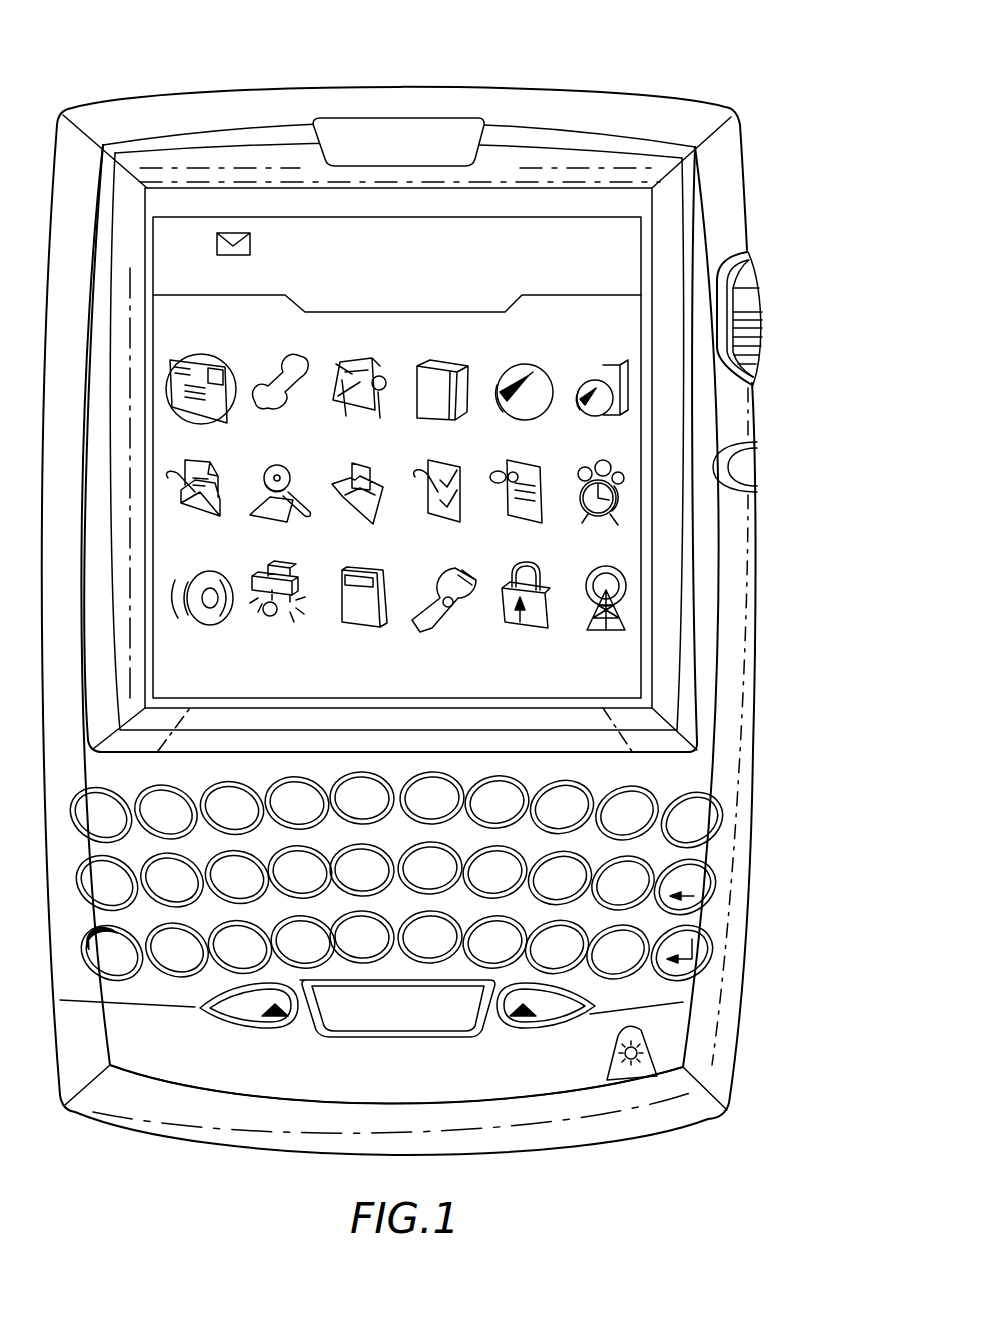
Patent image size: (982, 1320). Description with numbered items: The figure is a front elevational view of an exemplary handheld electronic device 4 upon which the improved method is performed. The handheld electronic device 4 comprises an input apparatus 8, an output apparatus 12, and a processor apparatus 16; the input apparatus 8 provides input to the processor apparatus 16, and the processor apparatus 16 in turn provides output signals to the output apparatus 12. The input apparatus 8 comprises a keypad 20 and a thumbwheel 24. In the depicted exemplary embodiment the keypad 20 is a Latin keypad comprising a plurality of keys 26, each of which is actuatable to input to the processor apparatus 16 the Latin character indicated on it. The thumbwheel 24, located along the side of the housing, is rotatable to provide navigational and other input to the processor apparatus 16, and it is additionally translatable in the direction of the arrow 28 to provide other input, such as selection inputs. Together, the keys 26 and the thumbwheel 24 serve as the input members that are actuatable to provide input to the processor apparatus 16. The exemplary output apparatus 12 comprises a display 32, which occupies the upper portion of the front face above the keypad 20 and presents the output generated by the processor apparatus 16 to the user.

The handheld electronic device 4 is at (523, 78).
The input apparatus 8 is at (783, 372).
The output apparatus 12 is at (612, 264).
The processor apparatus 16 is at (247, 1061).
The keypad 20 is at (713, 853).
The thumbwheel 24 is at (749, 277).
The keys 26 is at (166, 786).
The arrow 28 is at (772, 318).
The display 32 is at (562, 236).